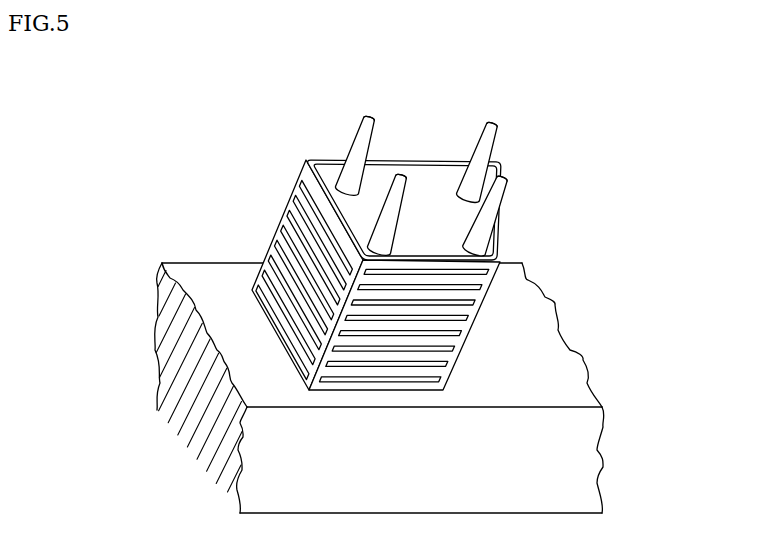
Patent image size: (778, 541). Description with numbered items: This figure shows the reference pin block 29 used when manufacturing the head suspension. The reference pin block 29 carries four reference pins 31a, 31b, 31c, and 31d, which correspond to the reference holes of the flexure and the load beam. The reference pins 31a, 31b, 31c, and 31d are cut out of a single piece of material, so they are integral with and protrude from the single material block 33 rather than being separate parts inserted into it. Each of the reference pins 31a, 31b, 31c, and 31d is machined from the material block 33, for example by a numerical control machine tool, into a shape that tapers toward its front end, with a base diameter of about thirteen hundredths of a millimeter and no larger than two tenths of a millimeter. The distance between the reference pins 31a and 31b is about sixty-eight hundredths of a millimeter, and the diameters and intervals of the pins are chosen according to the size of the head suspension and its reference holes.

The reference pin block 29 is at (403, 158).
The reference pin 31a is at (350, 153).
The reference pin 31b is at (477, 150).
The reference pin 31c is at (384, 210).
The reference pin 31d is at (490, 215).
The material block 33 is at (480, 313).